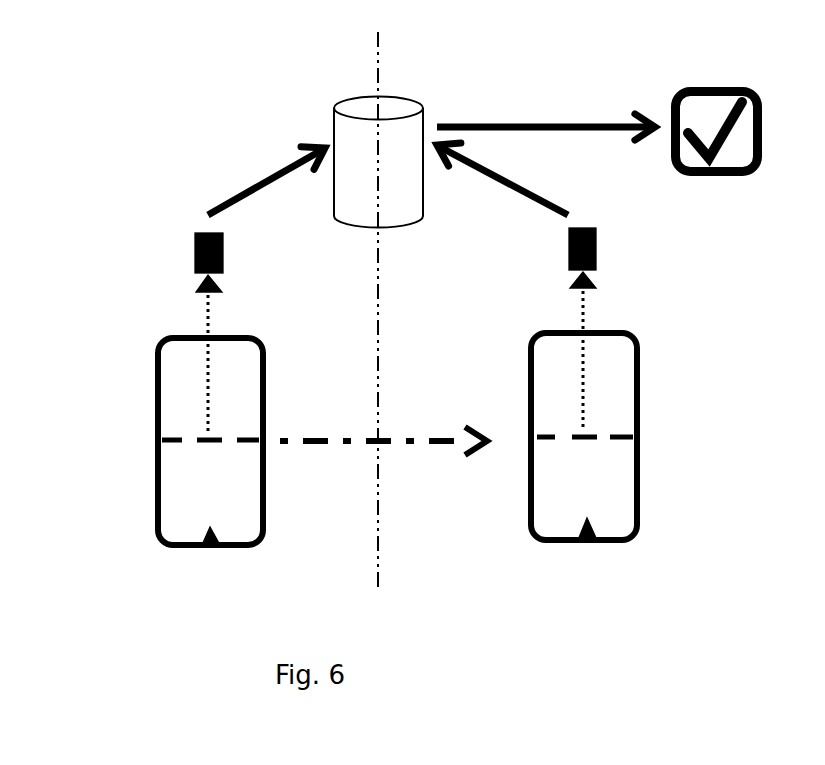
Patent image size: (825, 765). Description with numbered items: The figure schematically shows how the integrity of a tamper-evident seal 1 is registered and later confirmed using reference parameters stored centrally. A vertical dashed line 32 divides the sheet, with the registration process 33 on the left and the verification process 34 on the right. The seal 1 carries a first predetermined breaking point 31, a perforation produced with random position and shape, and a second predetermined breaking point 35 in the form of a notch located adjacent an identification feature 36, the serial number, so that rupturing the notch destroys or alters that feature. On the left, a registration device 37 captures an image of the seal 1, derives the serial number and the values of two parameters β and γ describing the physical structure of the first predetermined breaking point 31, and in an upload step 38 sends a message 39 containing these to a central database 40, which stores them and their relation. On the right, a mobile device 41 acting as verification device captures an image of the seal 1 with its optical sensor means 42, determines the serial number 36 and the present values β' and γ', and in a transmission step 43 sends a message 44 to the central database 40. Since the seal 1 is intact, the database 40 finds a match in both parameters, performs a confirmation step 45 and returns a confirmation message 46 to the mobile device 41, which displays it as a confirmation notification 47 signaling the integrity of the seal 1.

The tamper-evident seal 1 is at (275, 432).
The first predetermined breaking point 31 is at (196, 448).
The vertical dashed line 32 is at (389, 67).
The registration process 33 is at (126, 198).
The verification process 34 is at (720, 338).
The second predetermined breaking point 35 is at (212, 551).
The identification feature 36 is at (249, 522).
The registration device 37 is at (232, 255).
The upload step 38 is at (286, 186).
The message 39 is at (209, 166).
The central database 40 is at (378, 162).
The mobile device 41 is at (603, 262).
The optical sensor means 42 is at (610, 300).
The transmission step 43 is at (480, 180).
The message 44 is at (531, 159).
The confirmation step 45 is at (609, 120).
The confirmation message 46 is at (706, 85).
The confirmation notification 47 is at (734, 165).